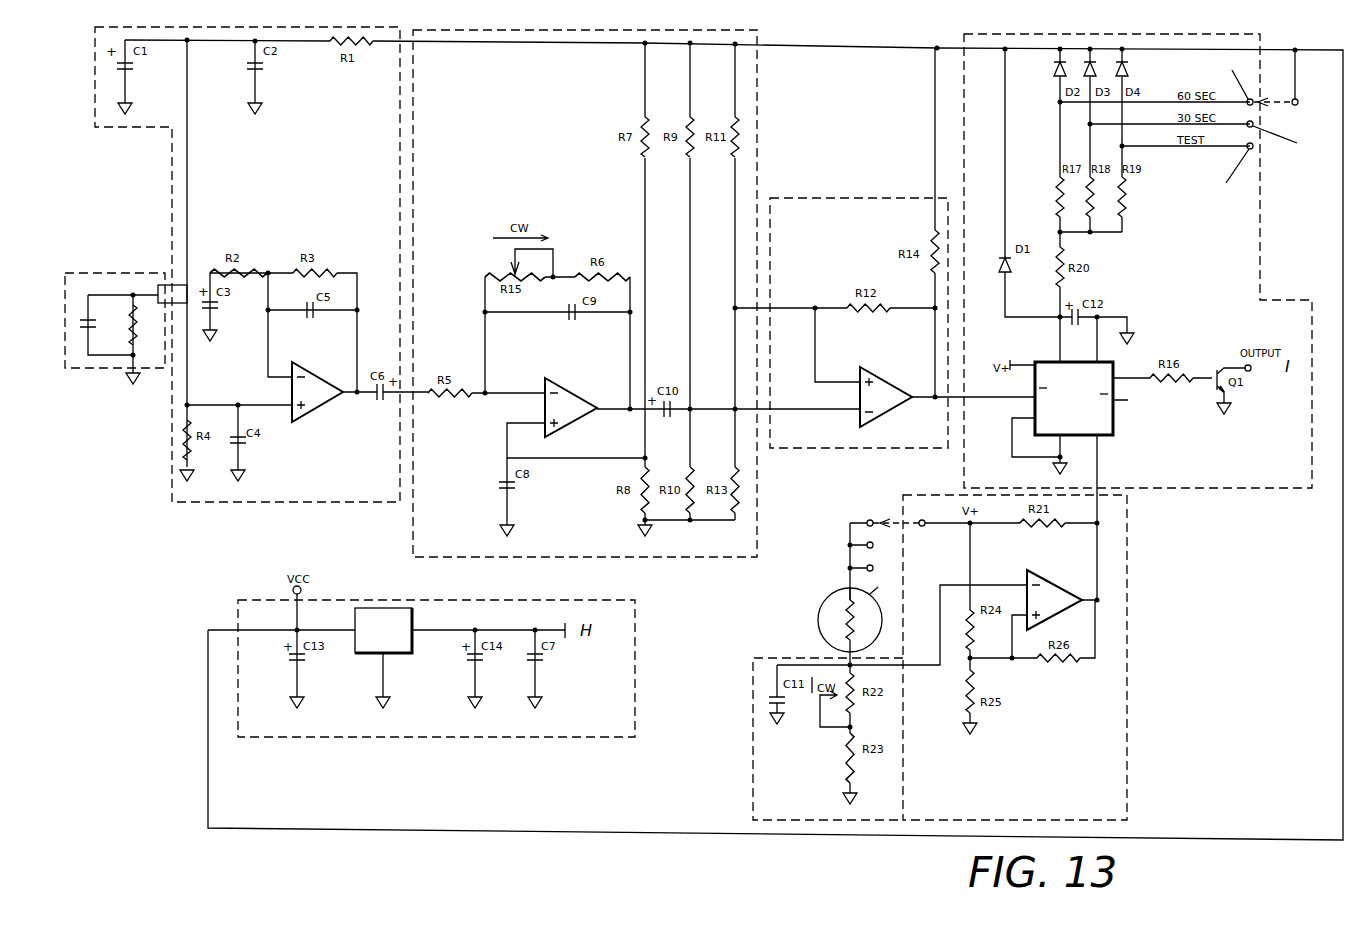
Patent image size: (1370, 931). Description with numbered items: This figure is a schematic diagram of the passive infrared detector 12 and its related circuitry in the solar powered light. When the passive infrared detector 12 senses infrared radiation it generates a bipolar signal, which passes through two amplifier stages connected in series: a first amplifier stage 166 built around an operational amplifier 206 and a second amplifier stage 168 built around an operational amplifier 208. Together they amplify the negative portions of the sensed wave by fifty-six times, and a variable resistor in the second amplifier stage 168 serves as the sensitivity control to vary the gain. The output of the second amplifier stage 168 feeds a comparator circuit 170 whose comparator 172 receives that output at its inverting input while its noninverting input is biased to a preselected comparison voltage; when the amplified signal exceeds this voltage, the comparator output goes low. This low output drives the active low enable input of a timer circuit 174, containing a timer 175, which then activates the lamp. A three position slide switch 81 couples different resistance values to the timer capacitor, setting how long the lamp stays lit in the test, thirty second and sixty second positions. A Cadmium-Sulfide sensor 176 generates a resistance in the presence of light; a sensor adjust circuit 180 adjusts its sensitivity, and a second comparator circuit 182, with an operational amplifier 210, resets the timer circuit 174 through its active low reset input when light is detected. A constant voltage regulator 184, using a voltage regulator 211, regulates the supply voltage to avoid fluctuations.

The passive infrared detector 12 is at (117, 372).
The three position slide switch 81 is at (1298, 100).
The first amplifier stage 166 is at (172, 165).
The second amplifier stage 168 is at (757, 147).
The comparator circuit 170 is at (817, 198).
The comparator 172 is at (877, 418).
The timer circuit 174 is at (1262, 270).
The timer 175 is at (1113, 432).
The Cadmium-Sulfide sensor 176 is at (820, 617).
The sensor adjust circuit 180 is at (755, 745).
The second comparator circuit 182 is at (1128, 722).
The constant voltage regulator 184 is at (518, 737).
The operational amplifier 206 is at (313, 413).
The operational amplifier 208 is at (570, 427).
The operational amplifier 210 is at (1042, 570).
The voltage regulator 211 is at (395, 653).